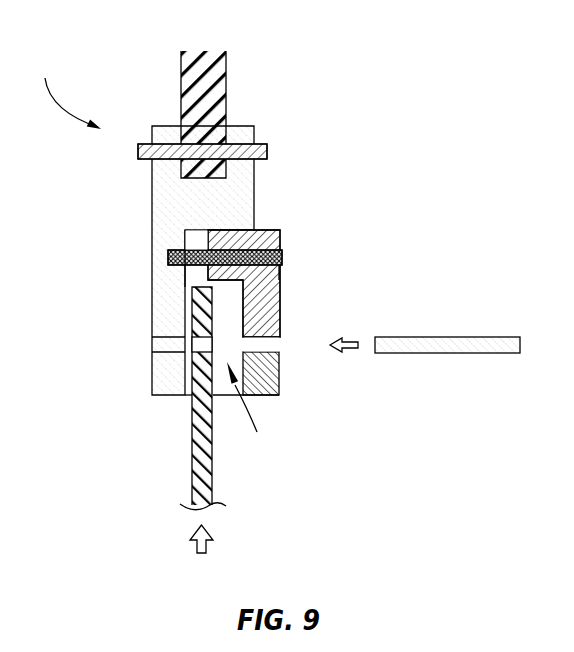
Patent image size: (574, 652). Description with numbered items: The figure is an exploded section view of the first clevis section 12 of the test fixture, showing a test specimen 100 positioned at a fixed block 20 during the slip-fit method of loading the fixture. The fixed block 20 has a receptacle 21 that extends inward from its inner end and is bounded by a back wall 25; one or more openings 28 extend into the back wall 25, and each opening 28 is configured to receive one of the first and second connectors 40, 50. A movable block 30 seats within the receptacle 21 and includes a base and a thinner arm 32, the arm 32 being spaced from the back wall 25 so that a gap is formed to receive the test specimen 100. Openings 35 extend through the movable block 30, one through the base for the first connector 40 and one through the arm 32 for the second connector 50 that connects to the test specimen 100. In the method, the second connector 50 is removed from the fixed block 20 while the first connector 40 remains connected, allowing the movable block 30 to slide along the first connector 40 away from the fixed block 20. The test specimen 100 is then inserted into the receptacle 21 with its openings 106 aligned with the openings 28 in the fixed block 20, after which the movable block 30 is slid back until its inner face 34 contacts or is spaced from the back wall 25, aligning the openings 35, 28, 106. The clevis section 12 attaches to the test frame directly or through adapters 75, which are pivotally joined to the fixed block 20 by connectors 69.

The first clevis section 12 is at (68, 91).
The fixed block 20 is at (170, 188).
The receptacle 21 is at (246, 410).
The back wall 25 is at (187, 243).
The openings 28 is at (165, 343).
The movable block 30 is at (274, 310).
The arm 32 is at (253, 382).
The inner face 34 is at (190, 232).
The openings 35 is at (283, 254).
The first connector 40 is at (190, 266).
The second connector 50 is at (447, 342).
The connectors 69 is at (267, 150).
The adapters 75 is at (230, 103).
The test specimen 100 is at (192, 473).
The openings 106 is at (203, 350).